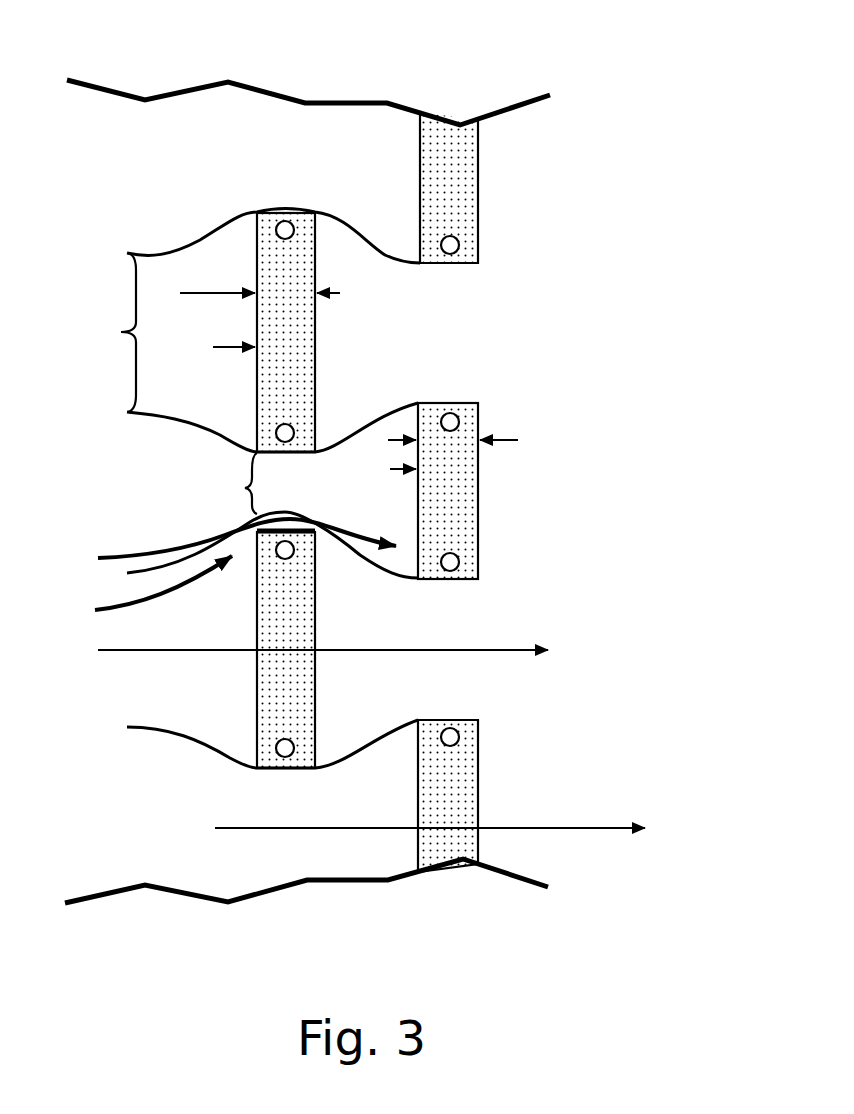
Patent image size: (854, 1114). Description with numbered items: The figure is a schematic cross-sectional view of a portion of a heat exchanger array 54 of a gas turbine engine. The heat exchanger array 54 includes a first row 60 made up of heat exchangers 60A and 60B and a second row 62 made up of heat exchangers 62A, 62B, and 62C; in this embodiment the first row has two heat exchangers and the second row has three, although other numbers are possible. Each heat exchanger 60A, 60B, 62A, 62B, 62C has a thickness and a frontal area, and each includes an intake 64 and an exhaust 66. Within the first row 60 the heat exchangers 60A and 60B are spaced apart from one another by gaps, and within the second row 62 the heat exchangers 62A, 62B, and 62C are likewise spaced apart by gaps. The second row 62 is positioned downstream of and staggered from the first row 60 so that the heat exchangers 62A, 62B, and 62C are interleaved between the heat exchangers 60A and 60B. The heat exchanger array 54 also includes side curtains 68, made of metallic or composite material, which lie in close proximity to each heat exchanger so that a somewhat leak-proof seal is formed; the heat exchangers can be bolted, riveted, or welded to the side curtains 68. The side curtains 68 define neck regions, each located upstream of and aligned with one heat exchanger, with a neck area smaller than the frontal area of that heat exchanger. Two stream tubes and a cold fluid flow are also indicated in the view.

The heat exchanger array 54 is at (396, 461).
The first row 60 is at (237, 438).
The heat exchanger 60A is at (257, 390).
The heat exchanger 60B is at (257, 693).
The second row 62 is at (401, 445).
The heat exchanger 62A is at (415, 217).
The heat exchanger 62B is at (418, 505).
The heat exchanger 62C is at (418, 780).
The intake 64 is at (535, 713).
The exhaust 66 is at (458, 244).
The side curtain 68 is at (198, 238).